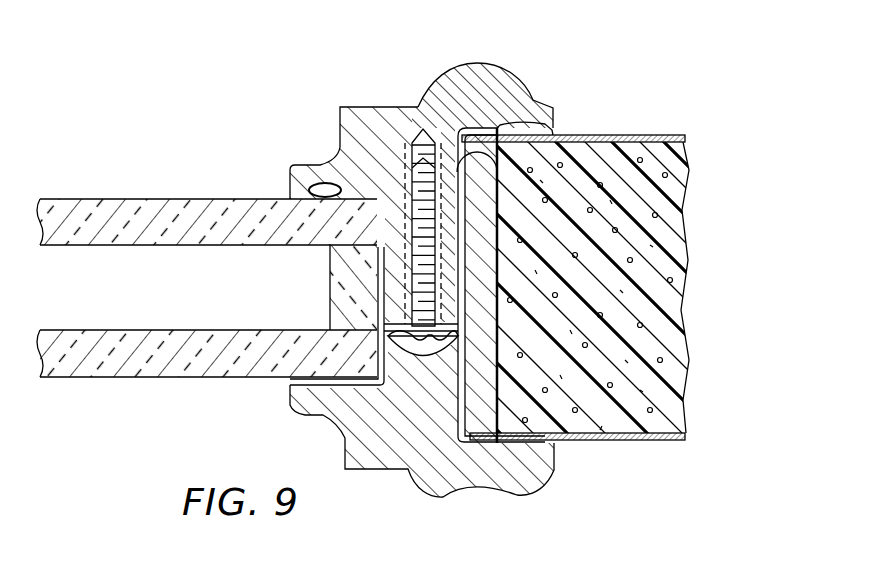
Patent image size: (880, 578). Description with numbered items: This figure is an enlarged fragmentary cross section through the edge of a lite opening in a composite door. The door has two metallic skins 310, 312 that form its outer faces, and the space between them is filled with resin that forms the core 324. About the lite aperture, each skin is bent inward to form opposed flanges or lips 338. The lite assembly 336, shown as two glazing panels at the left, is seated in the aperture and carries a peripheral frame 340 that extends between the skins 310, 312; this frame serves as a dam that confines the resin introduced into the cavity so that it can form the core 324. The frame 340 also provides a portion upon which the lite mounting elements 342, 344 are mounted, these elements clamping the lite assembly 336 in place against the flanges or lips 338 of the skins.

The metallic skin 310 is at (638, 447).
The metallic skin 312 is at (648, 133).
The core 324 is at (663, 368).
The lite assembly 336 is at (196, 388).
The flanges or lips 338 is at (562, 140).
The peripheral frame 340 is at (497, 289).
The lite mounting element 342 is at (477, 472).
The lite mounting element 344 is at (480, 88).